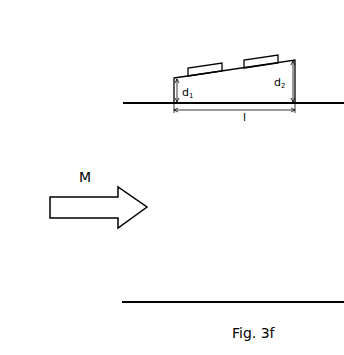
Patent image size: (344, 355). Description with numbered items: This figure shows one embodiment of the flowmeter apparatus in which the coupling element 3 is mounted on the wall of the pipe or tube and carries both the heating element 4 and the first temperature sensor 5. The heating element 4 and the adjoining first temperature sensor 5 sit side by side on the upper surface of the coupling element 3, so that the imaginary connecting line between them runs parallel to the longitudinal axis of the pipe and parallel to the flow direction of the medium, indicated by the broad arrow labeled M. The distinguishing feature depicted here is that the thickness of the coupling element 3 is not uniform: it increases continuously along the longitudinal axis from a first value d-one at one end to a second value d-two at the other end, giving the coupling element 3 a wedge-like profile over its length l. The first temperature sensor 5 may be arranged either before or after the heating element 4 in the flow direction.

The coupling element 3 is at (167, 80).
The heating element 4 is at (207, 65).
The first temperature sensor 5 is at (253, 58).